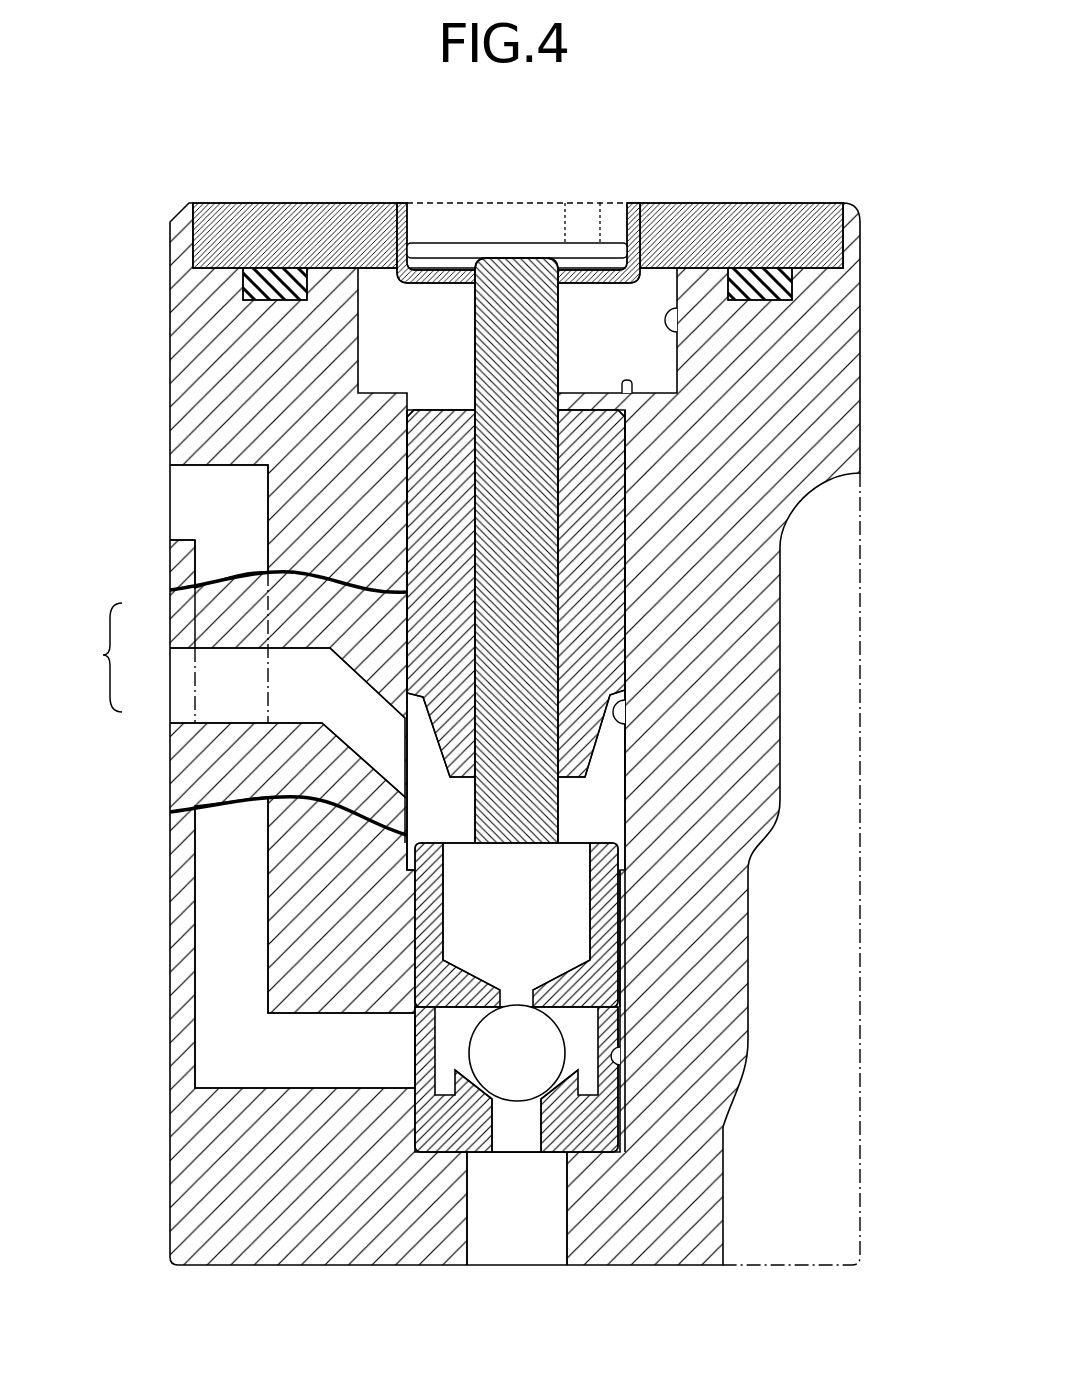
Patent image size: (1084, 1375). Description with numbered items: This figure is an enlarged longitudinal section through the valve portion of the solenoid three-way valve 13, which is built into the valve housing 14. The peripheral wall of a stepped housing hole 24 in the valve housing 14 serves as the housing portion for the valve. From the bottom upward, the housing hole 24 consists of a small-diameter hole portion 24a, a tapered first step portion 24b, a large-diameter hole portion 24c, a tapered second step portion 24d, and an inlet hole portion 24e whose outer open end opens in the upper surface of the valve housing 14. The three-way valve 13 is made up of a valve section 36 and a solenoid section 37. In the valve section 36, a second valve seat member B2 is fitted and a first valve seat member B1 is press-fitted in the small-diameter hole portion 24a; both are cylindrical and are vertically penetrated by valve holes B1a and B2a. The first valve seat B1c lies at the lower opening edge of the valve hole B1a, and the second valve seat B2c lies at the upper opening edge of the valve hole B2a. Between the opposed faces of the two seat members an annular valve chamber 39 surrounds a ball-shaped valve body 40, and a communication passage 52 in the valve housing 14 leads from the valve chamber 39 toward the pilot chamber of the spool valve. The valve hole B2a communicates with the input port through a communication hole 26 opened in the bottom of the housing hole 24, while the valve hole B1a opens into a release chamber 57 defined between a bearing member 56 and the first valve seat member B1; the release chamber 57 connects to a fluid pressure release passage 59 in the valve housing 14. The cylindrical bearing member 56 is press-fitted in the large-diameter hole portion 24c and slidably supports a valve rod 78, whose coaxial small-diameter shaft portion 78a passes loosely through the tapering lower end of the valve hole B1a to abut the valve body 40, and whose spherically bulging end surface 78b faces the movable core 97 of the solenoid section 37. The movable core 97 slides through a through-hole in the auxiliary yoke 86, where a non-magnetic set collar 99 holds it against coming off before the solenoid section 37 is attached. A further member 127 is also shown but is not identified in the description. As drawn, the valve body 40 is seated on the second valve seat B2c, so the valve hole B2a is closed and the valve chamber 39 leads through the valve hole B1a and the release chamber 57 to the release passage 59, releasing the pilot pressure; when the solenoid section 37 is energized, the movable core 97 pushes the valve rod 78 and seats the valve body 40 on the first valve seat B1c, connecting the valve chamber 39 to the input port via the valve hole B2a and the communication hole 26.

The valve housing 14 is at (318, 1265).
The solenoid three-way valve 13 is at (95, 657).
The solenoid section 37 is at (262, 467).
The valve section 36 is at (434, 831).
The fluid pressure release passage 59 is at (296, 650).
The communication passage 52 is at (195, 870).
The housing hole 24 is at (622, 800).
The small-diameter hole portion 24a is at (628, 1046).
The first step portion 24b is at (632, 870).
The large-diameter hole portion 24c is at (628, 706).
The second step portion 24d is at (633, 380).
The inlet hole portion 24e is at (662, 312).
The bearing member 56 is at (592, 556).
The release chamber 57 is at (598, 780).
The valve rod 78 is at (560, 633).
The small-diameter shaft portion 78a is at (533, 944).
The end surface 78b is at (514, 256).
The auxiliary yoke 86 is at (790, 232).
The movable core 97 is at (542, 220).
The set collar 99 is at (398, 212).
The seal member 127 is at (795, 280).
The first valve seat member B1 is at (620, 972).
The valve hole B1a is at (574, 873).
The first valve seat B1c is at (479, 1017).
The second valve seat member B2 is at (621, 1127).
The valve hole B2a is at (540, 1106).
The second valve seat B2c is at (484, 1074).
The valve chamber 39 is at (414, 1027).
The valve body 40 is at (516, 1088).
The communication hole 26 is at (478, 1234).